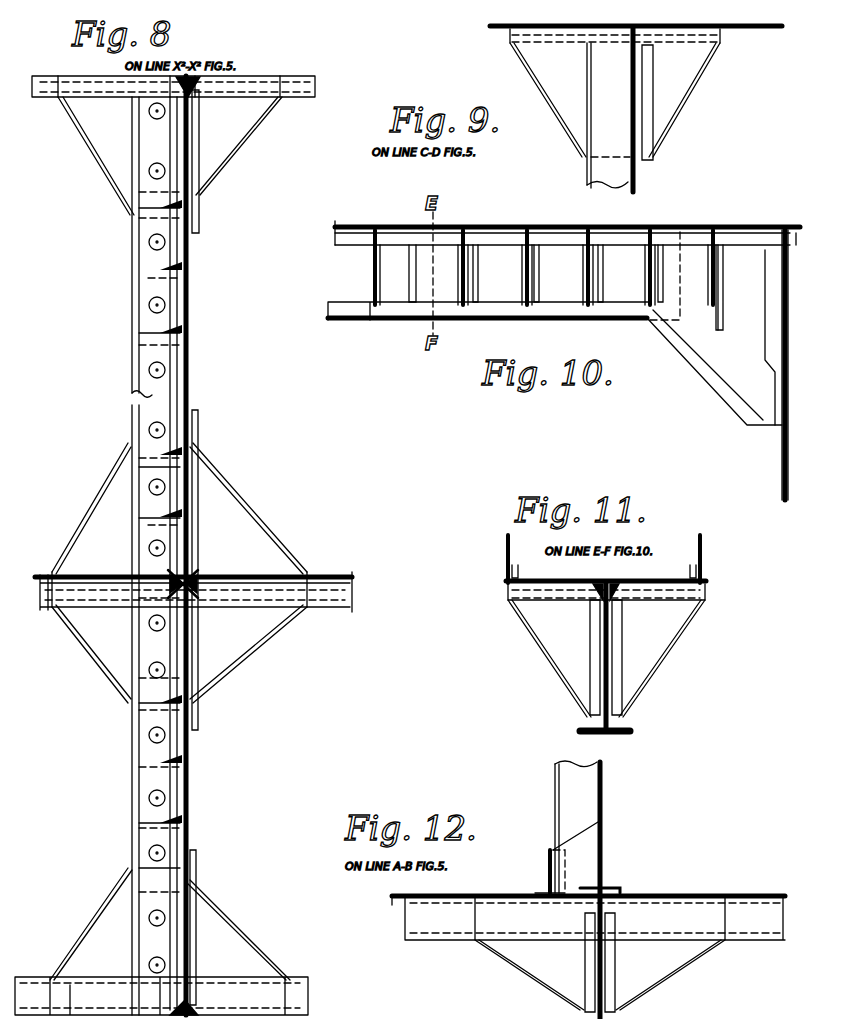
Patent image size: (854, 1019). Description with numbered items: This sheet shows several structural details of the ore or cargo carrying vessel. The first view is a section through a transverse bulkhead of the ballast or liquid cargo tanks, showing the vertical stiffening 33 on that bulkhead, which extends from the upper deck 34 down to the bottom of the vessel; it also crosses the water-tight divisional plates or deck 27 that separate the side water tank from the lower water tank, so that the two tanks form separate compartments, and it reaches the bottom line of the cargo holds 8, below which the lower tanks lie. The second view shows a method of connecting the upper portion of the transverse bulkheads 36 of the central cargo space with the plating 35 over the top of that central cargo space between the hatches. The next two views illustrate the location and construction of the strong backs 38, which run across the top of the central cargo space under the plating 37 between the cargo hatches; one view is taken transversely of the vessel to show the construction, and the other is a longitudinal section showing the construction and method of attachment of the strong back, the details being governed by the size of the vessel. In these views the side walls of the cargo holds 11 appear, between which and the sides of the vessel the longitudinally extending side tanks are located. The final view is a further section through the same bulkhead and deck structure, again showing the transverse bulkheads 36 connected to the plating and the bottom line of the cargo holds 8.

In FIG. 12, the bottom line of the cargo holds 8 is at (487, 888).
In FIG. 10, the side walls of the cargo holds 11 is at (783, 453).
In FIG. 8, the water-tight divisional plates or deck 27 is at (250, 566).
In FIG. 8, the vertical stiffening 33 is at (172, 368).
In FIG. 8, the upper deck 34 is at (258, 80).
In FIG. 9, the plating over the top of the central cargo space 35 is at (633, 28).
In FIG. 9, the transverse bulkheads of the central cargo space 36 is at (637, 175).
In FIG. 12, the transverse bulkheads of the central cargo space 36 is at (604, 806).
In FIG. 10, the plating between the cargo hatches 37 is at (684, 232).
In FIG. 11, the plating between the cargo hatches 37 is at (640, 570).
In FIG. 10, the strong backs 38 is at (555, 337).